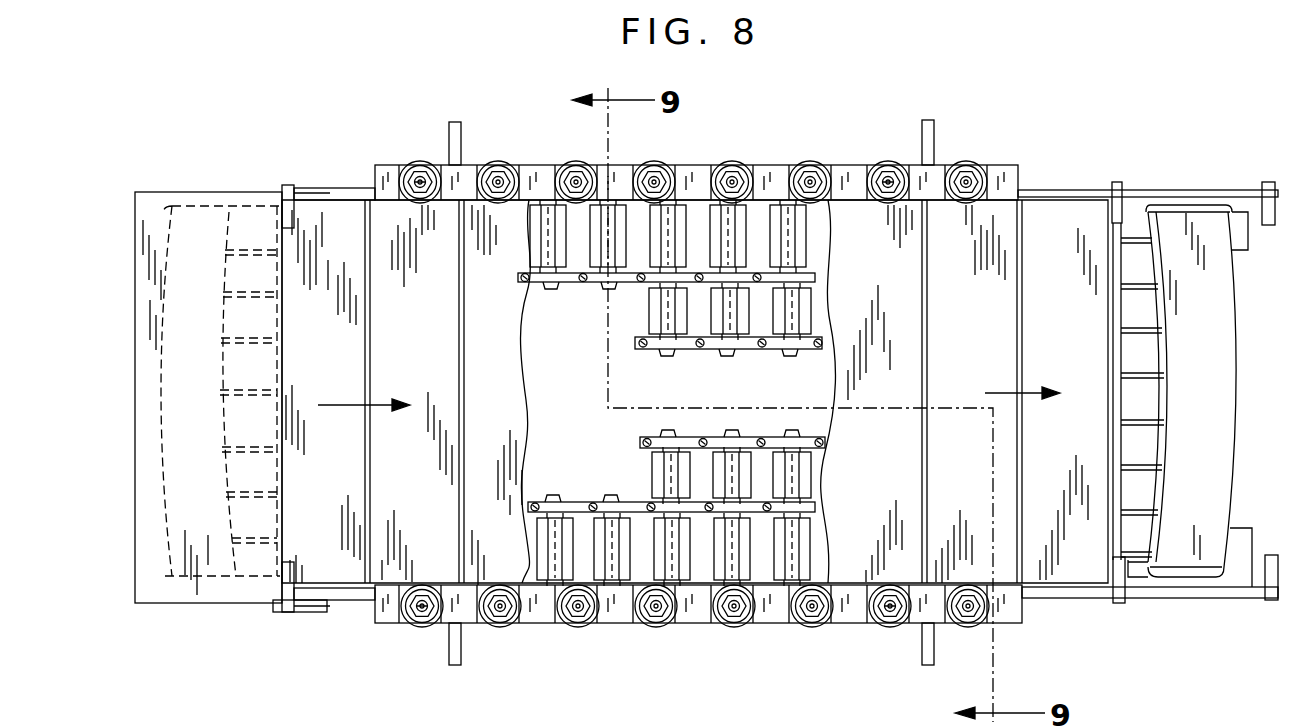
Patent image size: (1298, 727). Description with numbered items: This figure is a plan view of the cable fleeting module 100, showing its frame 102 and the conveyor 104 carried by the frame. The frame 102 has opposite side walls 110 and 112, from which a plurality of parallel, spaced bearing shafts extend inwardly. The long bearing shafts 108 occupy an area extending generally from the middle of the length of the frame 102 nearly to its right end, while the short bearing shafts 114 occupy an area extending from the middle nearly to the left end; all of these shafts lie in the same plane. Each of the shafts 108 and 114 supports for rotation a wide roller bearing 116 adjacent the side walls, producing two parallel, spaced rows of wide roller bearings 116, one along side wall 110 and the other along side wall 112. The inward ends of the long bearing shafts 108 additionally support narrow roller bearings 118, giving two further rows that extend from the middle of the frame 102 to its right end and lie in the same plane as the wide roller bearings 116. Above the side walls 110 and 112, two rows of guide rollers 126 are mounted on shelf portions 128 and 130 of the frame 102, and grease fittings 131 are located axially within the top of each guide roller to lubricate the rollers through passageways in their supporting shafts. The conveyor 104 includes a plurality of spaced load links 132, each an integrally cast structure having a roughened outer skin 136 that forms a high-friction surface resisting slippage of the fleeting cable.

The cable fleeting module 100 is at (259, 174).
The frame 102 is at (1181, 600).
The conveyor 104 is at (1238, 514).
The long bearing shafts 108 is at (733, 430).
The side wall 110 is at (330, 196).
The side wall 112 is at (373, 604).
The short bearing shafts 114 is at (606, 289).
The wide roller bearing 116 is at (546, 218).
The narrow roller bearing 118 is at (668, 312).
The guide rollers 126 is at (659, 170).
The shelf portion 128 is at (1008, 188).
The shelf portion 130 is at (1020, 616).
The grease fittings 131 is at (417, 180).
The load links 132 is at (1238, 281).
The roughened outer skin 136 is at (1077, 216).